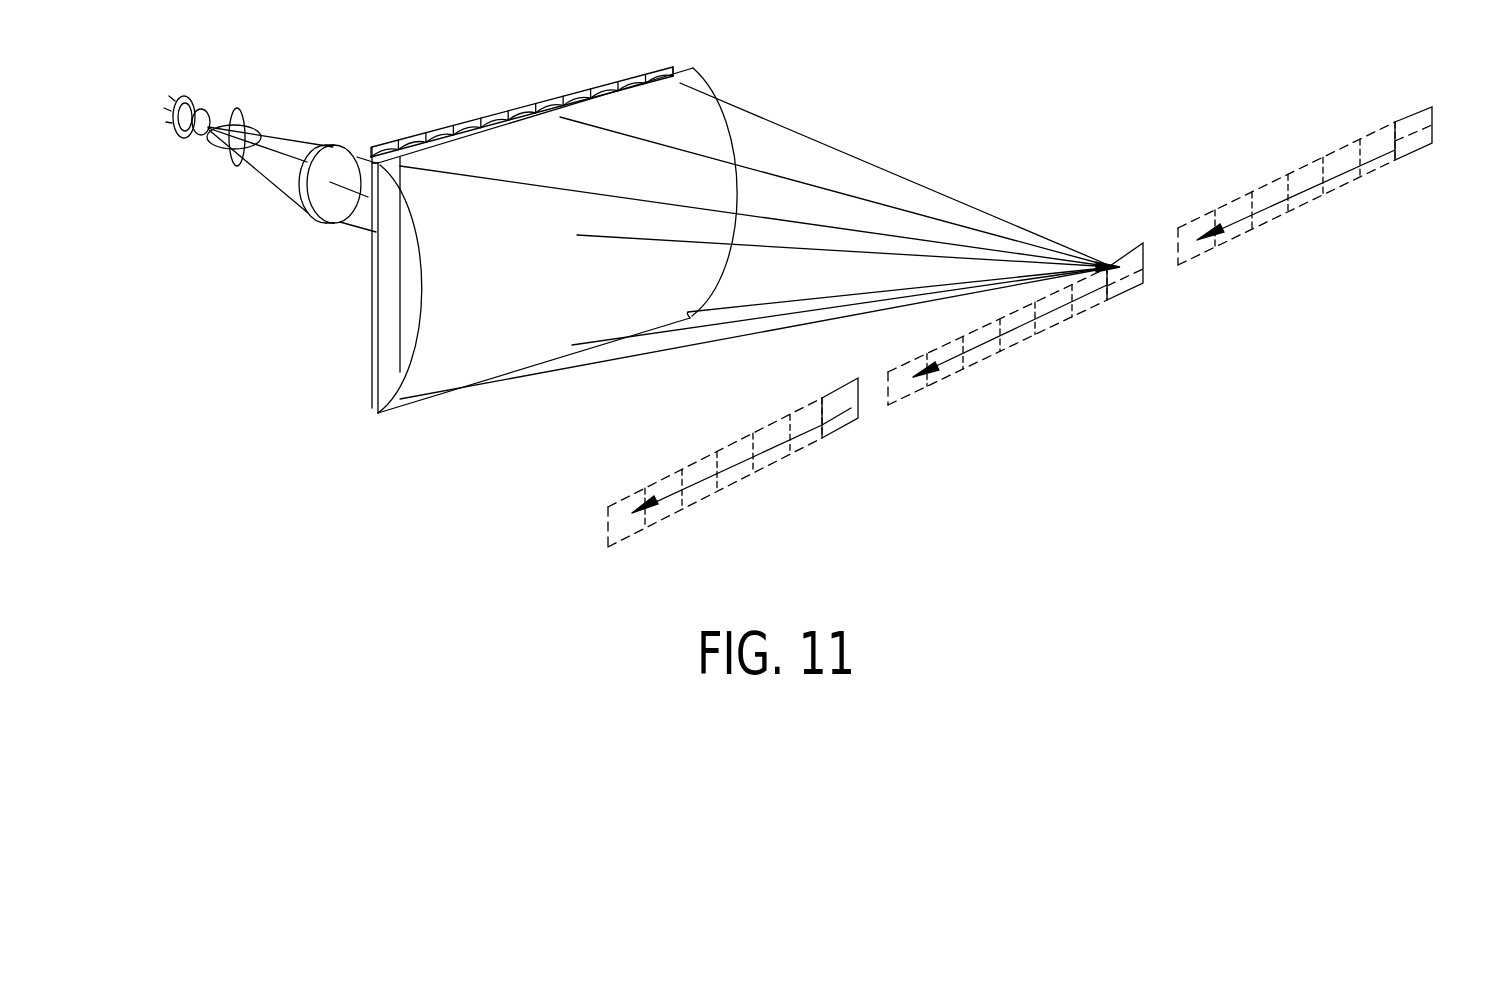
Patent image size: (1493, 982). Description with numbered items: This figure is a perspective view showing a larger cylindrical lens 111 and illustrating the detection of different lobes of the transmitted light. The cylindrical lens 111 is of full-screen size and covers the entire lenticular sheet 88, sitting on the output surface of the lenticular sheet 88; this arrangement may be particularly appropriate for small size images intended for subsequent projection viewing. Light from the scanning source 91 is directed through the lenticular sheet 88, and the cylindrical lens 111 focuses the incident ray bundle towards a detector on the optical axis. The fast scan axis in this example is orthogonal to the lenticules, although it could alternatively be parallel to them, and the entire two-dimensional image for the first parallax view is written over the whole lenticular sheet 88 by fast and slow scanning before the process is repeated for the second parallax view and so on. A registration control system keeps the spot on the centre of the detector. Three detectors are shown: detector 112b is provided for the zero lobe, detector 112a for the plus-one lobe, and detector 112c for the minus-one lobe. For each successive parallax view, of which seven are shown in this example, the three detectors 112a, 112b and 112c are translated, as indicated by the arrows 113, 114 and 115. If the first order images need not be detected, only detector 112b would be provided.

The lenticular sheet 88 is at (487, 112).
The light source and condenser optics 91 is at (220, 166).
The cylindrical lens 111 is at (443, 370).
The detector 112a is at (1415, 152).
The detector 112b is at (1130, 290).
The detector 112c is at (860, 420).
The arrow 113 is at (1285, 180).
The arrow 114 is at (983, 350).
The arrow 115 is at (733, 458).